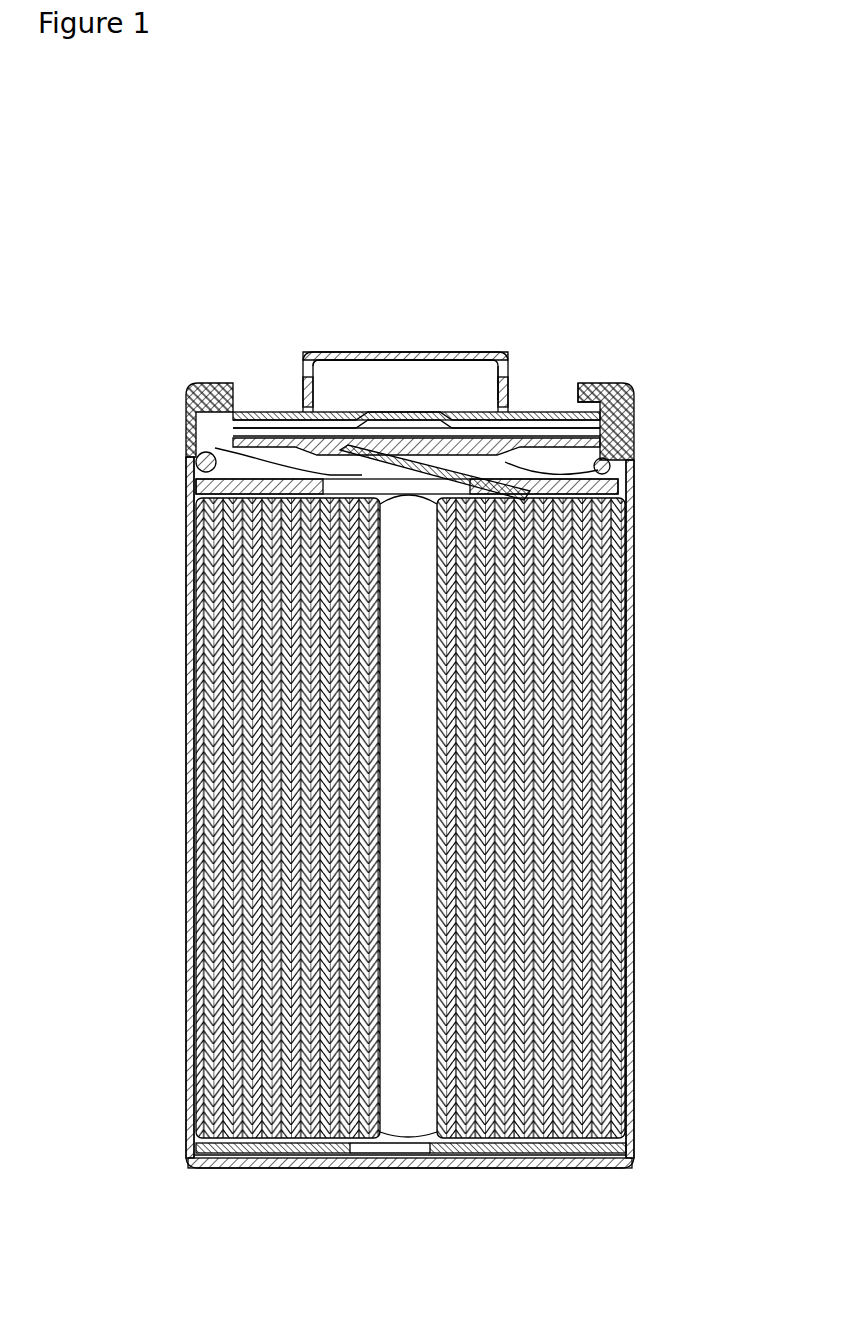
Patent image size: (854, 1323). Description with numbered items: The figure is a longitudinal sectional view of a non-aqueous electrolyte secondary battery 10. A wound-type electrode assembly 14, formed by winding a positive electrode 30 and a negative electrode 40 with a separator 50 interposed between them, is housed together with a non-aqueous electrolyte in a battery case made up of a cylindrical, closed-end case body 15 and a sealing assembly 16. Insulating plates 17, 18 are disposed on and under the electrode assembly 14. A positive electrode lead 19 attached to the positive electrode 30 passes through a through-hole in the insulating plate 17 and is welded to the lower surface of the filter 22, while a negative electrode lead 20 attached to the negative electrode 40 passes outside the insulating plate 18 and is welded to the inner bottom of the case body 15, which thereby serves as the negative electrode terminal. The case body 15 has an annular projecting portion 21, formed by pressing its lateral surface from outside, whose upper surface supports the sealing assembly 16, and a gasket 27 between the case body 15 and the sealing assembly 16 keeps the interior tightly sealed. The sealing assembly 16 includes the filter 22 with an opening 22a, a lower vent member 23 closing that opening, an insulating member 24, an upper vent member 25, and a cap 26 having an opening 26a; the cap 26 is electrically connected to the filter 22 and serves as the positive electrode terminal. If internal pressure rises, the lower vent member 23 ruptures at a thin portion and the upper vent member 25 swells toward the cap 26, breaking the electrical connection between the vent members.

The non-aqueous electrolyte secondary battery 10 is at (614, 255).
The wound-type electrode assembly 14 is at (477, 816).
The case body 15 is at (636, 381).
The sealing assembly 16 is at (504, 358).
The insulating plate 17 is at (618, 492).
The insulating plate 18 is at (634, 1160).
The positive electrode lead 19 is at (203, 451).
The negative electrode lead 20 is at (194, 1152).
The projecting portion 21 is at (203, 476).
The filter 22 is at (405, 438).
The opening of the filter 22a is at (434, 448).
The lower vent member 23 is at (313, 420).
The insulating member 24 is at (258, 412).
The upper vent member 25 is at (340, 428).
The cap 26 is at (486, 356).
The opening of the cap 26a is at (508, 379).
The gasket 27 is at (630, 404).
The positive electrode 30 is at (624, 890).
The negative electrode 40 is at (624, 914).
The separator 50 is at (718, 868).